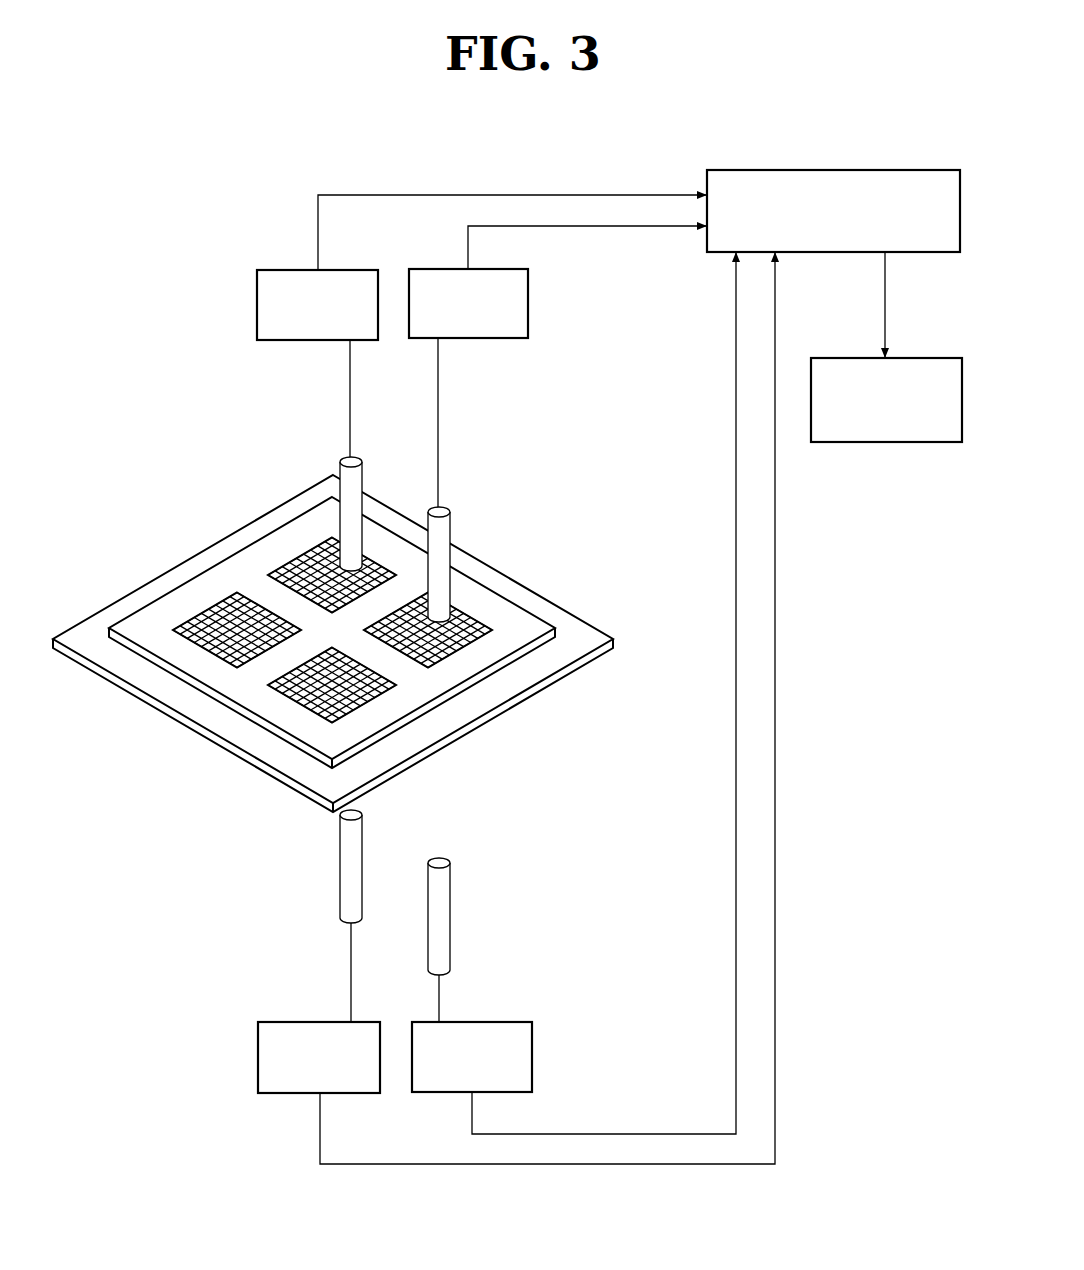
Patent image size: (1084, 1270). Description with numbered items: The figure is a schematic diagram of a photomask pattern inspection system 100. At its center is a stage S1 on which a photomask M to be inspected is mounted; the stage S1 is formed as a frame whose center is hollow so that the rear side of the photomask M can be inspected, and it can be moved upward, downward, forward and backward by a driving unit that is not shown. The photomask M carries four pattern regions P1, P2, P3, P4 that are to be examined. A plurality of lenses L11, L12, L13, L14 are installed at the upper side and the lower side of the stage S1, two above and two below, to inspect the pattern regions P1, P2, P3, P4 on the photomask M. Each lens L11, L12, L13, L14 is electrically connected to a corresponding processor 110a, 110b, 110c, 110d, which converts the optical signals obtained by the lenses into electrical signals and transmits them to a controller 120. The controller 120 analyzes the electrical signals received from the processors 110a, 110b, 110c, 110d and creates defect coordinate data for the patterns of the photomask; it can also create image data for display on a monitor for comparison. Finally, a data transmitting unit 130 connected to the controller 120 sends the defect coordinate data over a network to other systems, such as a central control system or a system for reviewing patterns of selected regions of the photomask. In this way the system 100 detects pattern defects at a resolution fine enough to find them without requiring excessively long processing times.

The photomask pattern inspection system 100 is at (549, 112).
The controller 120 is at (835, 168).
The data transmitting unit 130 is at (876, 443).
The processor 110a is at (257, 301).
The processor 110b is at (528, 300).
The processor 110c is at (258, 1057).
The processor 110d is at (532, 1055).
The stage S1 is at (200, 708).
The photomask M is at (223, 572).
The pattern region P1 is at (297, 562).
The pattern region P2 is at (490, 632).
The pattern region P3 is at (200, 613).
The pattern region P4 is at (400, 695).
The lens L11 is at (345, 475).
The lens L12 is at (443, 528).
The lens L13 is at (350, 875).
The lens L14 is at (440, 920).